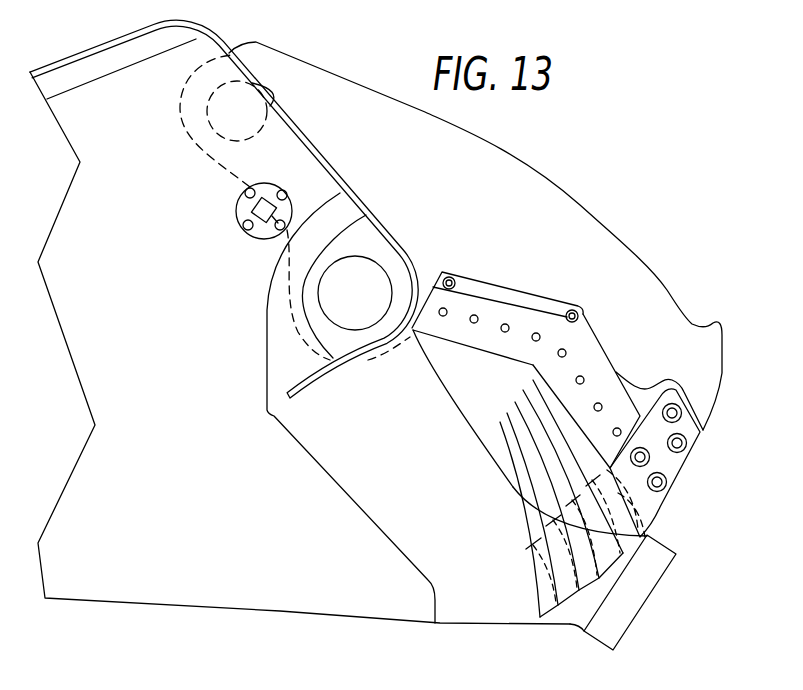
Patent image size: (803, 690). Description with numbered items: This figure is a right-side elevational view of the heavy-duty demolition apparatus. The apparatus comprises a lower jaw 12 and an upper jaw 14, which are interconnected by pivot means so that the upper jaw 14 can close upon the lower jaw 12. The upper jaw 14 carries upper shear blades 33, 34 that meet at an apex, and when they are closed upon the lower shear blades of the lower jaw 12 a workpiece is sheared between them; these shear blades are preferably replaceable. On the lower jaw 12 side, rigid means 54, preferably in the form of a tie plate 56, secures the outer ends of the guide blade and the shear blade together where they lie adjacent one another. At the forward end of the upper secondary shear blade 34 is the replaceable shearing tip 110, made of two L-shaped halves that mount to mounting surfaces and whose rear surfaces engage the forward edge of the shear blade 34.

The lower jaw 12 is at (397, 625).
The upper jaw 14 is at (560, 200).
The upper shear blade 33 is at (497, 310).
The upper shear blade 34 is at (572, 413).
The rigid means 54 is at (669, 592).
The tie plate 56 is at (655, 588).
The replaceable shearing tip 110 is at (680, 480).